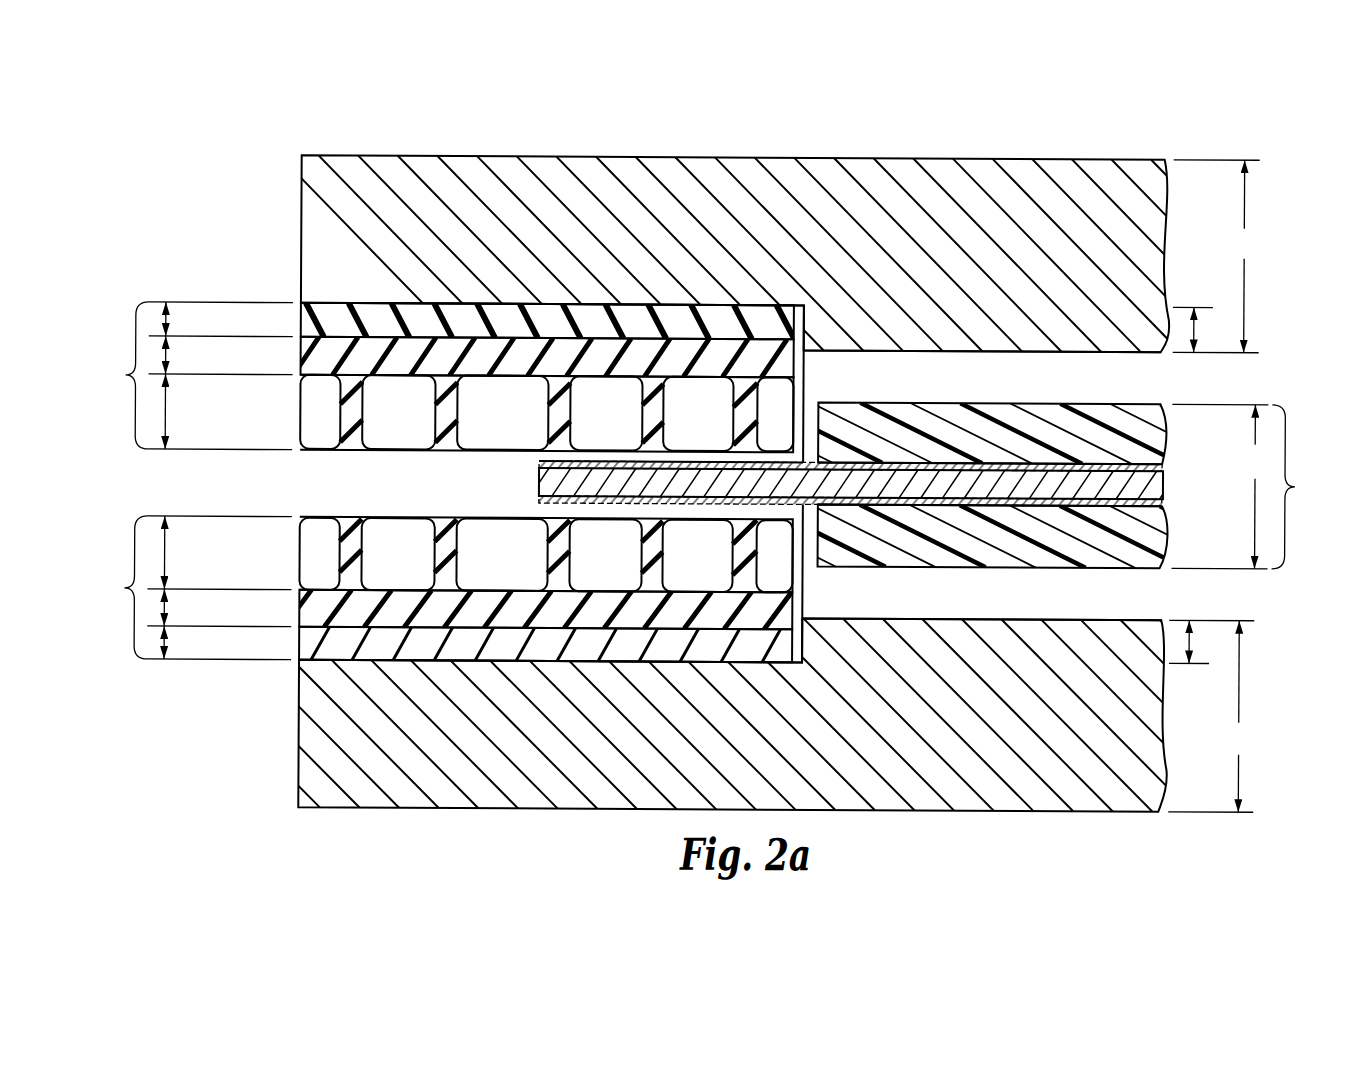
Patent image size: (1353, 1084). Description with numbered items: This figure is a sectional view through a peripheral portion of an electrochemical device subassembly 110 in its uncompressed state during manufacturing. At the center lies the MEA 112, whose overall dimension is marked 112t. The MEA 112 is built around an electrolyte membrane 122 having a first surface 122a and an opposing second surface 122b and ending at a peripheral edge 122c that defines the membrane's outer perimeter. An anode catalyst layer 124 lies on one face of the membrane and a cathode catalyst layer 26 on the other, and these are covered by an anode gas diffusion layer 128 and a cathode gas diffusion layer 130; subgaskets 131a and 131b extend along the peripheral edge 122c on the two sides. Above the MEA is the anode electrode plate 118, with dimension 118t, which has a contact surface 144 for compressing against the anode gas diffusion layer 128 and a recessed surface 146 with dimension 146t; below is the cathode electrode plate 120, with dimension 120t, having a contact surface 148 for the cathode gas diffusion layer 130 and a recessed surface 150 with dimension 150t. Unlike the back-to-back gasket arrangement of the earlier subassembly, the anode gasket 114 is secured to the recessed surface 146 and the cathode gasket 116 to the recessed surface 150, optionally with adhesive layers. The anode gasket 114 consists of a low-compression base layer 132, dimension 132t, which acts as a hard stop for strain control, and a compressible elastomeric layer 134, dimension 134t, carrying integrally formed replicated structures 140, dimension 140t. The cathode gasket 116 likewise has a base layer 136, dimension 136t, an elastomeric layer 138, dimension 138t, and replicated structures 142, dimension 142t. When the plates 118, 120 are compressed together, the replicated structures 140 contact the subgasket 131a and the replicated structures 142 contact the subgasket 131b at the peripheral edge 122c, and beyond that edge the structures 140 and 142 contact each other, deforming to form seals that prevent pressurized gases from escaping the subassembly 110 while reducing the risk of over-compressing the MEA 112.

The electrochemical device subassembly 110 is at (1112, 138).
The MEA 112 is at (941, 485).
The thickness of cable assembly 112t is at (1227, 486).
The anode gasket 114 is at (433, 377).
The cathode gasket 116 is at (432, 589).
The anode electrode plate 118 is at (1152, 192).
The thickness of upper housing 118t is at (1222, 256).
The cathode electrode plate 120 is at (1150, 772).
The thickness of lower housing 120t is at (1218, 716).
The electrolyte membrane 122 is at (1164, 490).
The first surface 122a is at (1000, 468).
The second surface 122b is at (993, 502).
The peripheral edge 122c is at (720, 461).
The anode catalyst layer 124 is at (1160, 466).
The cathode catalyst layer 26 is at (1162, 503).
The anode gas diffusion layer 128 is at (1105, 414).
The cathode gas diffusion layer 130 is at (1105, 562).
The subgasket 131a is at (803, 462).
The subgasket 131b is at (803, 504).
The base layer 132 is at (312, 334).
The thickness of upper first layer 132t is at (167, 320).
The elastomeric layer 134 is at (312, 361).
The thickness of upper second layer 134t is at (167, 355).
The base layer 136 is at (316, 650).
The thickness of lower first layer 136t is at (167, 645).
The elastomeric layer 138 is at (312, 608).
The thickness of lower second layer 138t is at (167, 610).
The replicated structures 140 is at (293, 418).
The thickness of upper ribbed layer 140t is at (165, 412).
The replicated structures 142 is at (293, 560).
The thickness of lower ribbed layer 142t is at (165, 557).
The contact surface 144 is at (1060, 351).
The recessed surface 146 is at (311, 302).
The depth of upper recess 146t is at (1197, 328).
The contact surface 148 is at (1055, 618).
The recessed surface 150 is at (311, 666).
The depth of lower recess 150t is at (1195, 640).